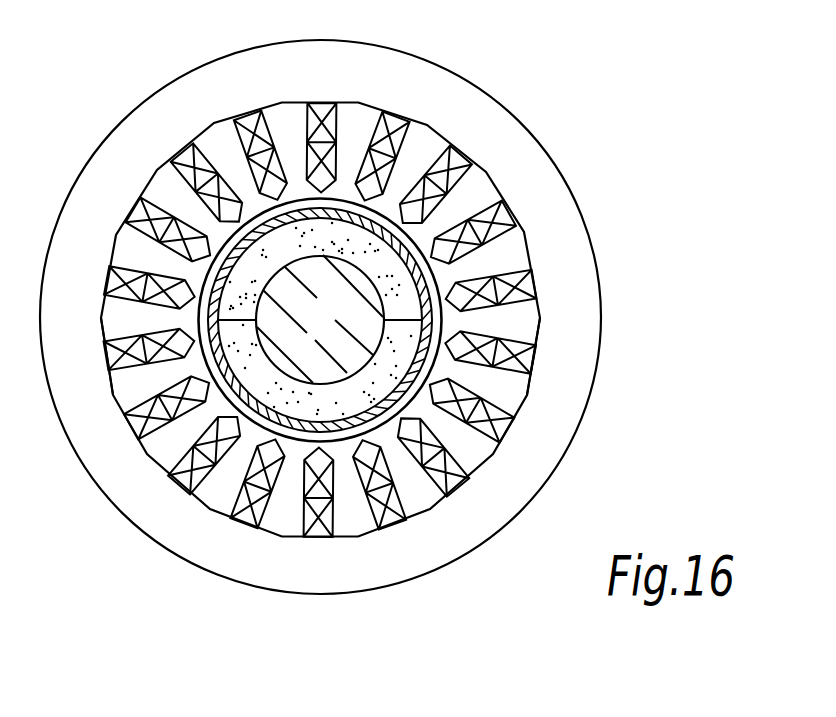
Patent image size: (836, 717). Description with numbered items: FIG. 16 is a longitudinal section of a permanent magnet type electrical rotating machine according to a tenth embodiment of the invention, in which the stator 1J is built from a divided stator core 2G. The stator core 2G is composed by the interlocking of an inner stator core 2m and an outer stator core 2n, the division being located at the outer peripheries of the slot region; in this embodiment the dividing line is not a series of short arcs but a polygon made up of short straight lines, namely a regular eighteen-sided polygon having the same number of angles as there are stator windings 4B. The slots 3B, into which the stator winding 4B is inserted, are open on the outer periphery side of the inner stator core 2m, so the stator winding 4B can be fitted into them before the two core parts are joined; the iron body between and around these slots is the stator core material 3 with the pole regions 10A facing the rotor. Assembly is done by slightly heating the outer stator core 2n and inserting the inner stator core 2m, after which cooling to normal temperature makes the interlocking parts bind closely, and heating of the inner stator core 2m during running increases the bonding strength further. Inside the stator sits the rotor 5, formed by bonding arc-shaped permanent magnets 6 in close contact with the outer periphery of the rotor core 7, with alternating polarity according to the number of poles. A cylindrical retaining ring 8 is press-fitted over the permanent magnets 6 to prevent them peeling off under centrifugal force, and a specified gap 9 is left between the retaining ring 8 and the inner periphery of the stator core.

The stator 1J is at (462, 104).
The stator core 2G is at (460, 548).
The outer stator core 2n is at (558, 427).
The inner stator core 2m is at (351, 122).
The stator core 3 is at (163, 428).
The slots 3B is at (102, 310).
The stator winding 4B is at (190, 152).
The rotor 5 is at (414, 239).
The permanent magnets 6 is at (267, 257).
The rotor core 7 is at (331, 334).
The retaining ring 8 is at (402, 180).
The gap 9 is at (430, 283).
The tooth tip 10A is at (208, 220).